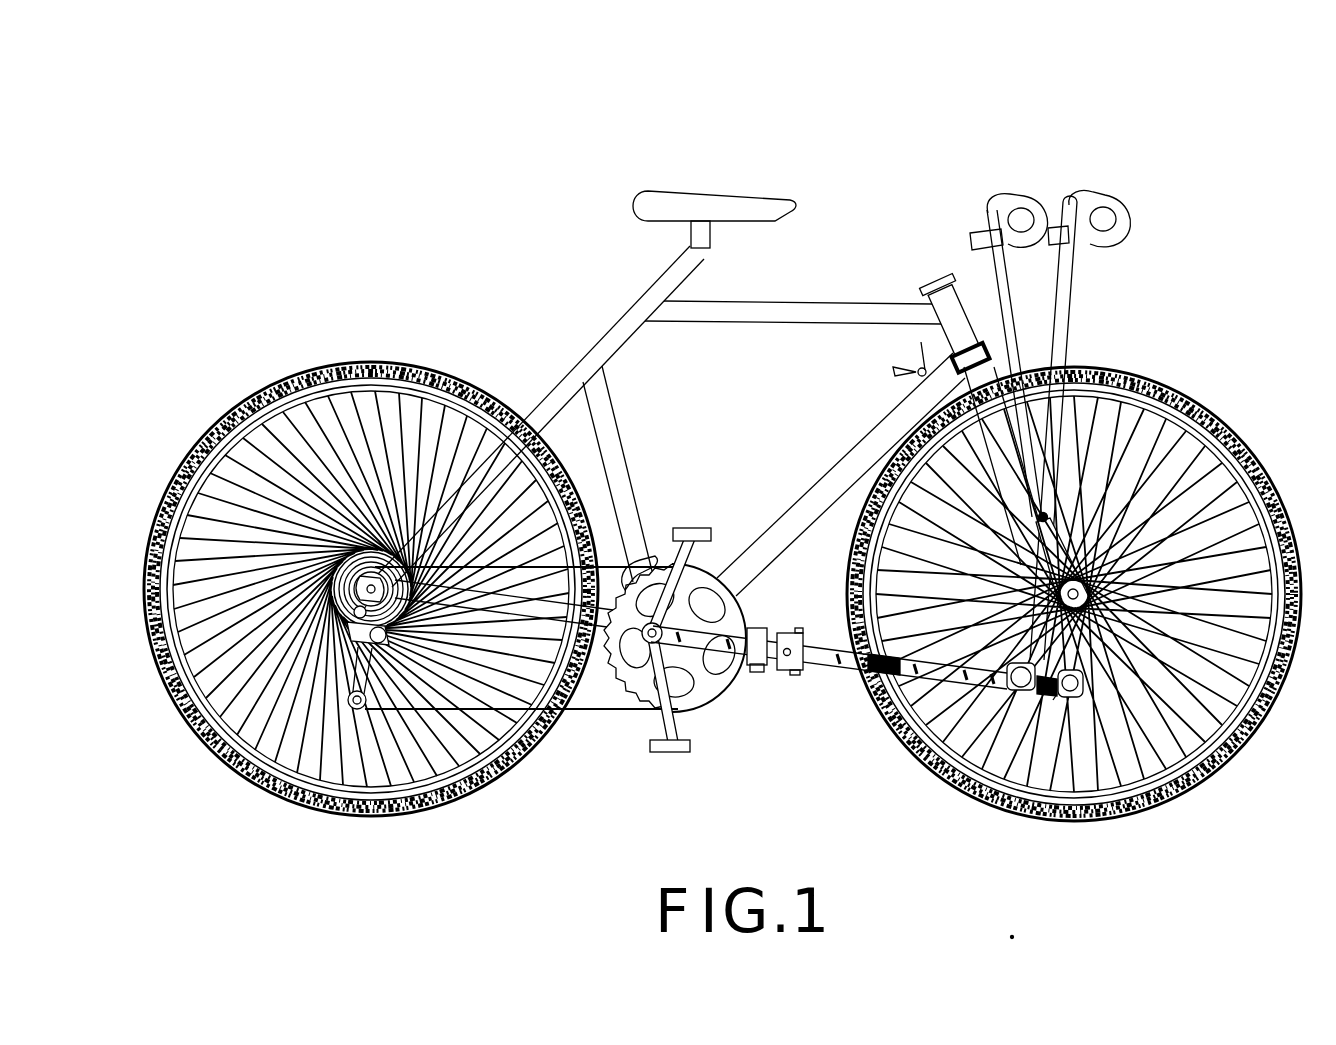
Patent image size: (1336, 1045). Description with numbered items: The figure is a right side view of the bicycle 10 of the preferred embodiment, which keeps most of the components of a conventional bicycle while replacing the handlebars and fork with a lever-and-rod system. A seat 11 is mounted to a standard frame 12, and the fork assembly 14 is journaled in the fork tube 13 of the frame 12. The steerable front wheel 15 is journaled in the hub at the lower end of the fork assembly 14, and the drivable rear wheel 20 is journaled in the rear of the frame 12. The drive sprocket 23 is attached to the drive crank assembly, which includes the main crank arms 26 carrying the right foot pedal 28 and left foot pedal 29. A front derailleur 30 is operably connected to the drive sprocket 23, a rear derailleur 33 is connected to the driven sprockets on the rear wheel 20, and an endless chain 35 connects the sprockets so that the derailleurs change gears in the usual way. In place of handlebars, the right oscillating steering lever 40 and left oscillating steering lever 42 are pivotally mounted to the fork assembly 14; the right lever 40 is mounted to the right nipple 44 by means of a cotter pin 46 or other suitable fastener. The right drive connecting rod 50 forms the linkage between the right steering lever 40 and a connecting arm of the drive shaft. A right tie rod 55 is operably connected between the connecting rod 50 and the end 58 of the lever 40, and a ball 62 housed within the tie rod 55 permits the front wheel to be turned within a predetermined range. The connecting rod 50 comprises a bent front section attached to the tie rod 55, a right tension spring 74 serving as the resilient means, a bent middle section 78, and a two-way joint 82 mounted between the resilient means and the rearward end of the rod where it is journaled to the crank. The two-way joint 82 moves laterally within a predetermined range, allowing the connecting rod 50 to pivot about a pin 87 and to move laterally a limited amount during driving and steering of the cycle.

The bicycle 10 is at (968, 132).
The seat 11 is at (660, 190).
The frame 12 is at (810, 294).
The fork tube 13 is at (979, 237).
The fork assembly 14 is at (990, 394).
The steerable front wheel 15 is at (1163, 383).
The drivable rear wheel 20 is at (495, 778).
The drive sprocket 23 is at (605, 730).
The main crank arms 26 is at (715, 540).
The right foot pedal 28 is at (698, 525).
The left foot pedal 29 is at (660, 748).
The front derailleur 30 is at (650, 558).
The rear derailleur 33 is at (338, 690).
The endless chain 35 is at (455, 773).
The right oscillating steering lever 40 is at (1080, 288).
The left oscillating steering lever 42 is at (1012, 291).
The right nipple 44 is at (1186, 500).
The cotter pin 46 is at (1046, 515).
The right drive connecting rod 50 is at (930, 697).
The right tie rod 55 is at (1079, 720).
The end of lever 58 is at (1202, 773).
The ball 62 is at (1053, 700).
The right tension spring 74 is at (875, 700).
The middle section 78 is at (812, 686).
The two-way joint 82 is at (772, 628).
The pin 87 is at (758, 672).